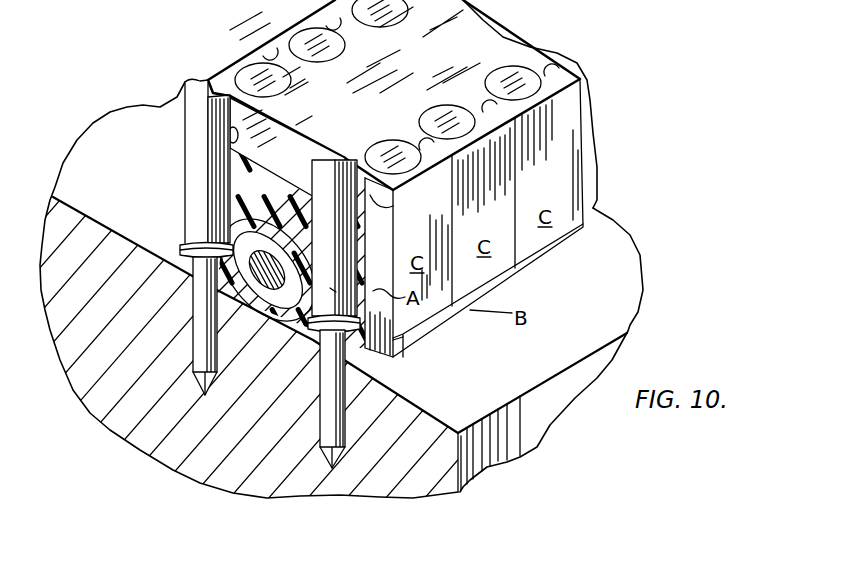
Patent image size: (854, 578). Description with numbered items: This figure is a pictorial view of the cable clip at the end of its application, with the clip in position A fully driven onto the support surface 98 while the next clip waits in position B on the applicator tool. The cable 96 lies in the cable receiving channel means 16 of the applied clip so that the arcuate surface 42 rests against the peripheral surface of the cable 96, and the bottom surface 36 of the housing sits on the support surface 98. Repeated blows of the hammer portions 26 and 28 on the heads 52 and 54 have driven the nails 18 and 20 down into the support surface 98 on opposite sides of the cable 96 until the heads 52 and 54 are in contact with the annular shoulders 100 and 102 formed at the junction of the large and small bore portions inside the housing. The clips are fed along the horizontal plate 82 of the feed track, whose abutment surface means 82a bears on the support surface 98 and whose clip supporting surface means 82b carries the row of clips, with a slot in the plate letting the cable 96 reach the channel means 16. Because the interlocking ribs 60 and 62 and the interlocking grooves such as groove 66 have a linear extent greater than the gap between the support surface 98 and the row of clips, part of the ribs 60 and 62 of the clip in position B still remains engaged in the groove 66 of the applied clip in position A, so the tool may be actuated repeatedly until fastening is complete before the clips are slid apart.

The cable receiving channel means 16 is at (247, 218).
The nail 18 is at (200, 356).
The nail 20 is at (330, 420).
The hammer portion 26 is at (193, 165).
The hammer portion 28 is at (337, 291).
The bottom surface 36 is at (403, 360).
The arcuate surface 42 is at (277, 234).
The head 52 is at (188, 240).
The head 54 is at (360, 358).
The interlocking rib 60 is at (233, 100).
The interlocking rib 62 is at (365, 192).
The interlocking groove 66 is at (375, 222).
The horizontal plate 82 is at (547, 258).
The abutment surface means 82a is at (528, 270).
The clip supporting surface means 82b is at (476, 230).
The cable 96 is at (245, 316).
The support surface 98 is at (250, 458).
The annular shoulder 100 is at (188, 282).
The annular shoulder 102 is at (345, 368).